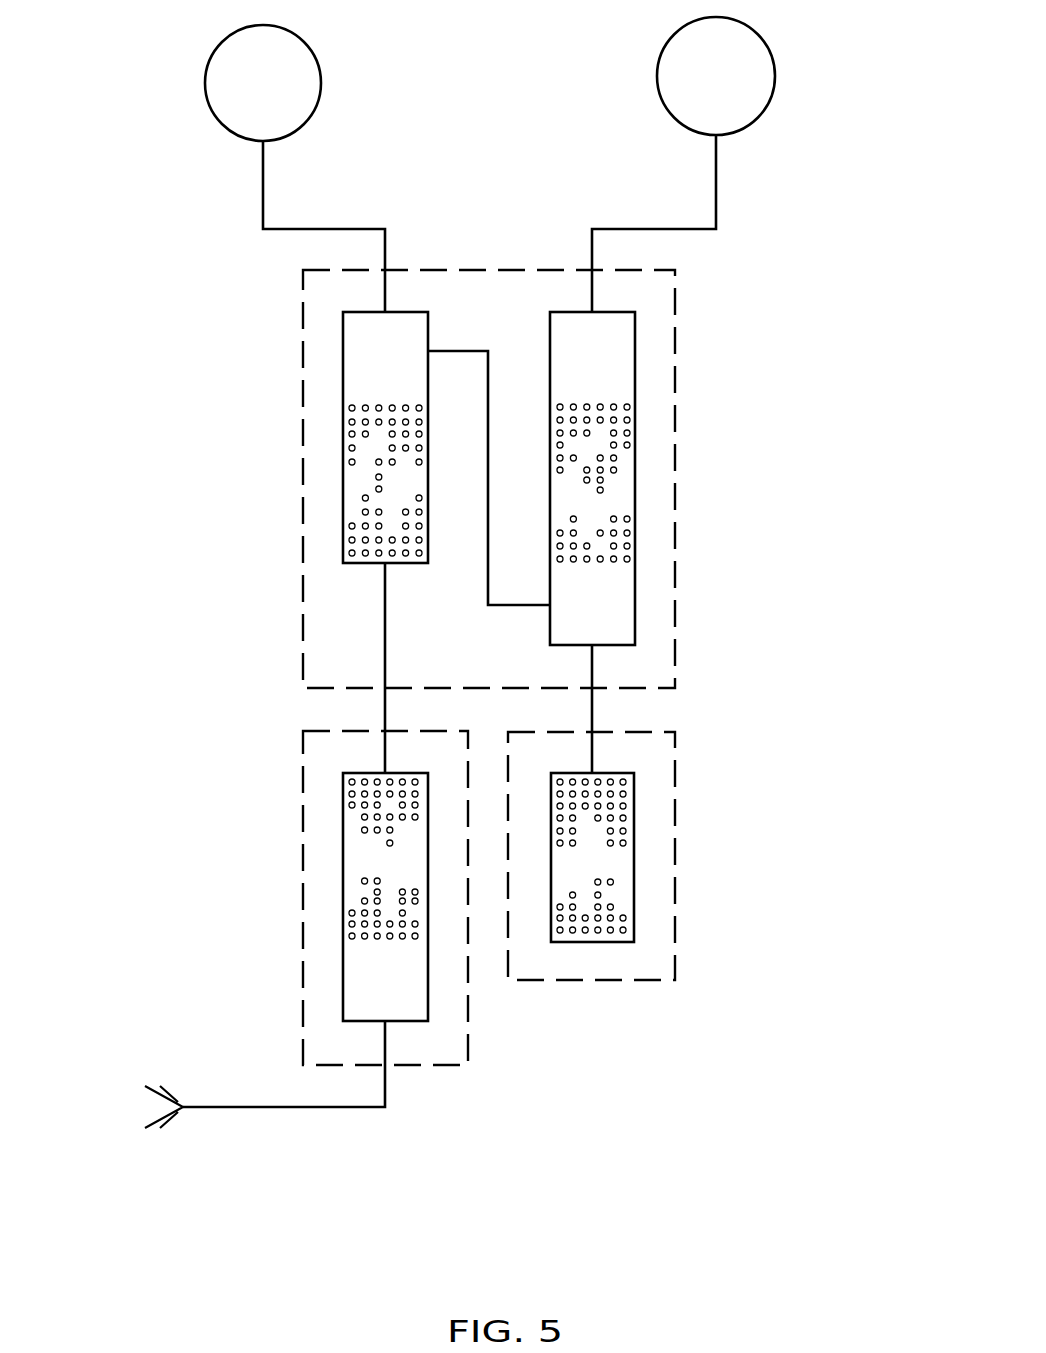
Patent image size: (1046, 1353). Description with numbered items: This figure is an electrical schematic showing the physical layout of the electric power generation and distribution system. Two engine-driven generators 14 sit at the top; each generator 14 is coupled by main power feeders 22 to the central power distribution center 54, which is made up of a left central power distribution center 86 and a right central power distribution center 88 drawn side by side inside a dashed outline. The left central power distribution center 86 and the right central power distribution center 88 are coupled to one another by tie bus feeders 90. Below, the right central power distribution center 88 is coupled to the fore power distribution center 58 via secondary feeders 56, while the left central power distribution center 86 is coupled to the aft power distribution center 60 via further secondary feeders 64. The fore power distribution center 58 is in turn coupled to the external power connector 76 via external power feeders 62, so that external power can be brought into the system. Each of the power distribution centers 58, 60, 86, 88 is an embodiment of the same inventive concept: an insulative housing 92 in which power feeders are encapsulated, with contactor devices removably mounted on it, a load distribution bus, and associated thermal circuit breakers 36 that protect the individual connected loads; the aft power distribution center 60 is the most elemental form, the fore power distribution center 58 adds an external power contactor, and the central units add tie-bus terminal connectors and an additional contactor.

The generator 14 is at (321, 83).
The main power feeders 22 is at (314, 229).
The thermal circuit breakers 36 is at (390, 407).
The central power distribution center 54 is at (675, 414).
The secondary feeders 56 is at (385, 712).
The fore power distribution center 58 is at (303, 748).
The aft power distribution center 60 is at (675, 844).
The external power feeders 62 is at (303, 1107).
The secondary feeders 64 is at (592, 705).
The external power connector 76 is at (160, 1127).
The left central power distribution center 86 is at (643, 340).
The right central power distribution center 88 is at (334, 380).
The tie bus feeders 90 is at (488, 402).
The insulative housing 92 is at (492, 682).